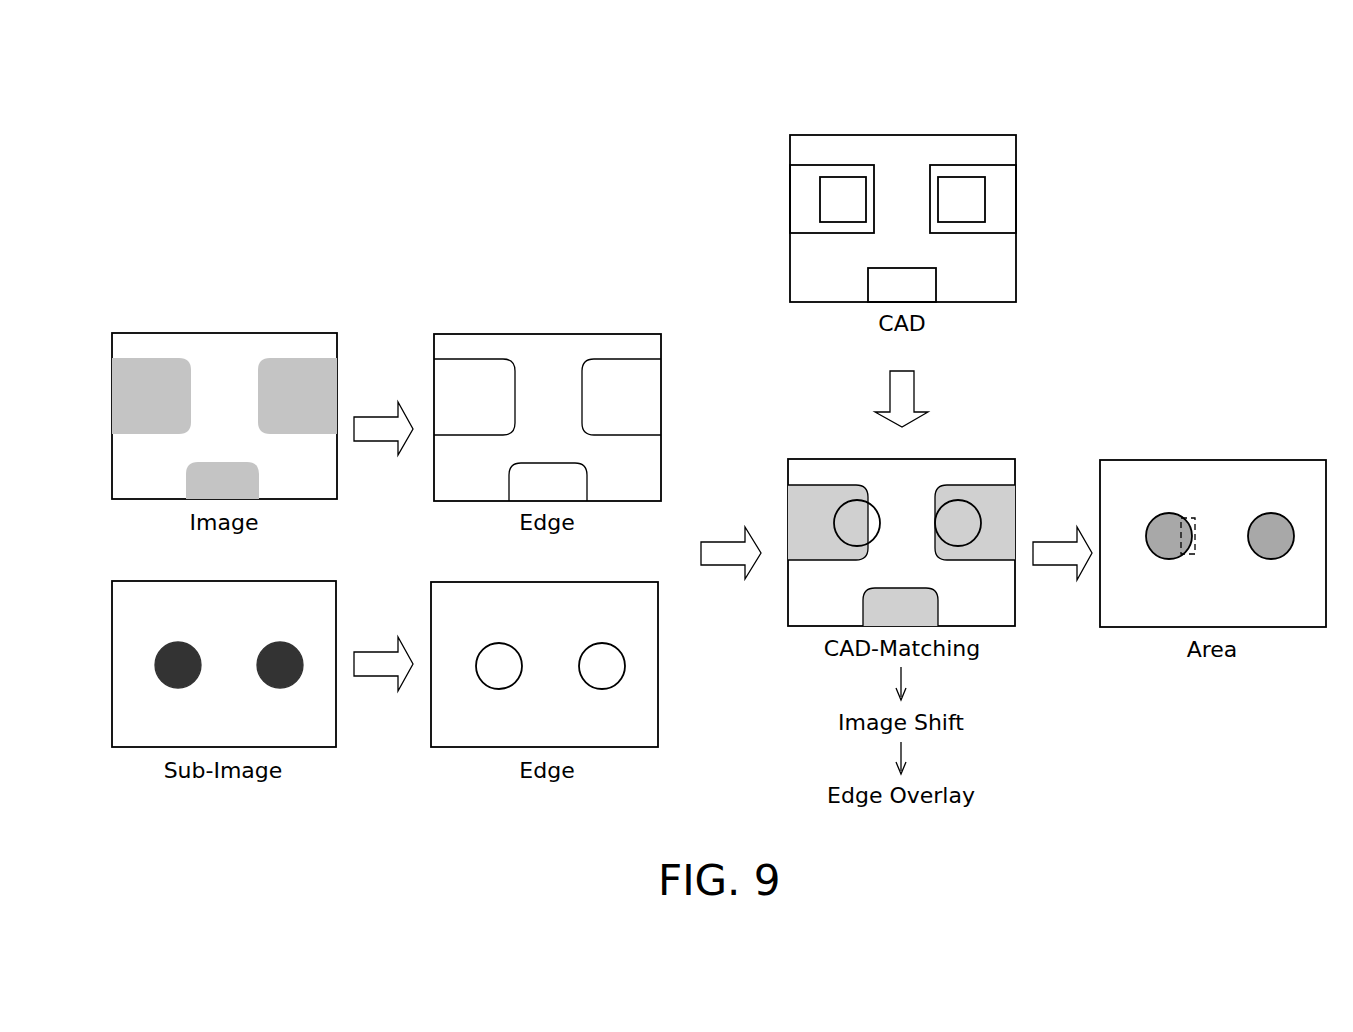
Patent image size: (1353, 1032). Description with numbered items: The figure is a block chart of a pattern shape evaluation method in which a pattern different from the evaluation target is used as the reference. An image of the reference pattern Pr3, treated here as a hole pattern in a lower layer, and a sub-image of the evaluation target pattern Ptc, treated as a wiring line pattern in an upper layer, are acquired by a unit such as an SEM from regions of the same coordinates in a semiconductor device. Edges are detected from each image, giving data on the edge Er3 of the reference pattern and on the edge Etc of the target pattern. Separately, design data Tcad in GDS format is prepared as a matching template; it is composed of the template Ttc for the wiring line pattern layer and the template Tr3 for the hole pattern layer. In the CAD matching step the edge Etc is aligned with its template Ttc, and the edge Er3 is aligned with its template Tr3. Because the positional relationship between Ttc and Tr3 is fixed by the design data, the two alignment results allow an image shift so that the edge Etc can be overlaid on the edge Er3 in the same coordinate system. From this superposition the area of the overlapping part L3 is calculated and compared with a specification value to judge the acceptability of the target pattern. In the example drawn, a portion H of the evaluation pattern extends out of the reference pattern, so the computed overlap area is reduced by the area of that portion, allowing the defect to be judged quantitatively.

The reference pattern Pr3 is at (148, 360).
The edge of reference pattern Er3 is at (483, 359).
The evaluation target pattern Ptc is at (155, 673).
The edge of evaluation target pattern Etc is at (477, 675).
The design data Tcad is at (905, 174).
The template for hole pattern layer Tr3 is at (840, 165).
The template for wiring line pattern layer Ttc is at (820, 193).
The overlap part L3 is at (1271, 513).
The protruding portion H is at (1183, 555).